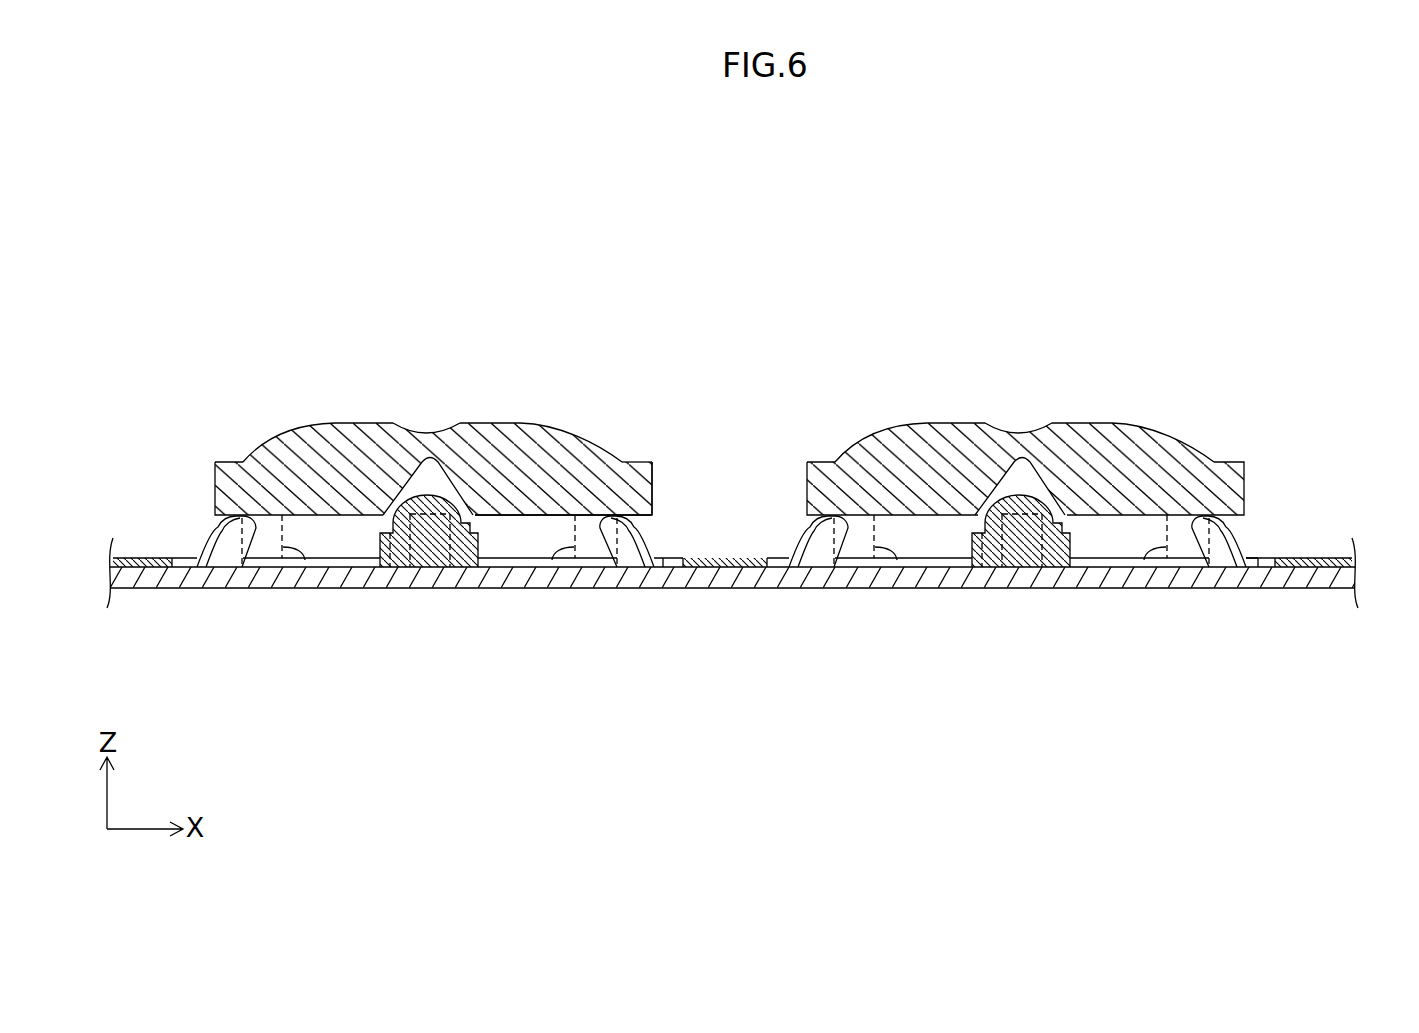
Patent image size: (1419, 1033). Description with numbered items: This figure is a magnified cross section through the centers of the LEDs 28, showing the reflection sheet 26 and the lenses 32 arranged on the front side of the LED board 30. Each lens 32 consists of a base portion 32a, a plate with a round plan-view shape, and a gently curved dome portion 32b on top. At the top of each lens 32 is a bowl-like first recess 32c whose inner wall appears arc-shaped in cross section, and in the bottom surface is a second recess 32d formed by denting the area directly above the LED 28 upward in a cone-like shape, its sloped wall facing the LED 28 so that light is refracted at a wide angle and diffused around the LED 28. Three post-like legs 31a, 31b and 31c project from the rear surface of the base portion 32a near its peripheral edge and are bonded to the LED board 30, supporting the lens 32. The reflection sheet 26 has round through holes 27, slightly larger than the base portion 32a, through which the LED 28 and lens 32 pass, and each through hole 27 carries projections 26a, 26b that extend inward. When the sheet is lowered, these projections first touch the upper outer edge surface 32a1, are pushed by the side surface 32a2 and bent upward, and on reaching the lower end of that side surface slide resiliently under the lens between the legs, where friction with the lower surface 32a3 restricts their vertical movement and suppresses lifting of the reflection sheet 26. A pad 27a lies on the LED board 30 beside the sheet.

The reflection sheet 26 is at (724, 570).
The projection 26a is at (228, 551).
The projection 26b is at (628, 548).
The through hole 27 is at (345, 562).
The electrode pad 27a is at (666, 570).
The LED 28 is at (465, 522).
The LED board 30 is at (780, 577).
The leg 31a is at (390, 567).
The leg 31b is at (552, 562).
The leg 31c is at (305, 560).
The lens 32 is at (729, 501).
The base portion 32a is at (622, 463).
The upper outer edge surface 32a1 is at (643, 463).
The side surface 32a2 is at (653, 492).
The lower surface 32a3 is at (551, 516).
The dome portion 32b is at (568, 458).
The first recess 32c is at (422, 430).
The second recess 32d is at (441, 465).